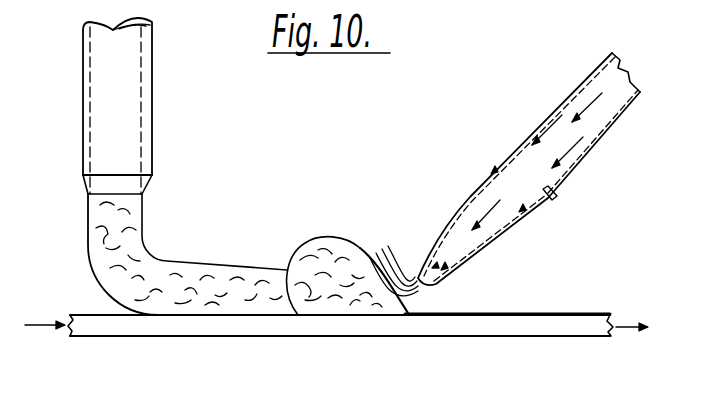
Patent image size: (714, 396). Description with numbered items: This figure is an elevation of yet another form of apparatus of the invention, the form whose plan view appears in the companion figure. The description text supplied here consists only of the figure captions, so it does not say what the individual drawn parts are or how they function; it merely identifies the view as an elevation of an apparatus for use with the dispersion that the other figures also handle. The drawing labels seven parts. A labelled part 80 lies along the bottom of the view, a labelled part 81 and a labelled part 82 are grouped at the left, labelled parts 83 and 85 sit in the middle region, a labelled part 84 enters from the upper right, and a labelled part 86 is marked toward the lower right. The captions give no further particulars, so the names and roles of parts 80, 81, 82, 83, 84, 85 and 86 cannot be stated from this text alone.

The substrate web 80 is at (87, 315).
The paste flow channel 81 is at (145, 242).
The feed tube 82 is at (83, 57).
The squeezed bead 83 is at (397, 289).
The doctor blade 84 is at (489, 173).
The mound of paste 85 is at (311, 240).
The coating layer 86 is at (575, 313).